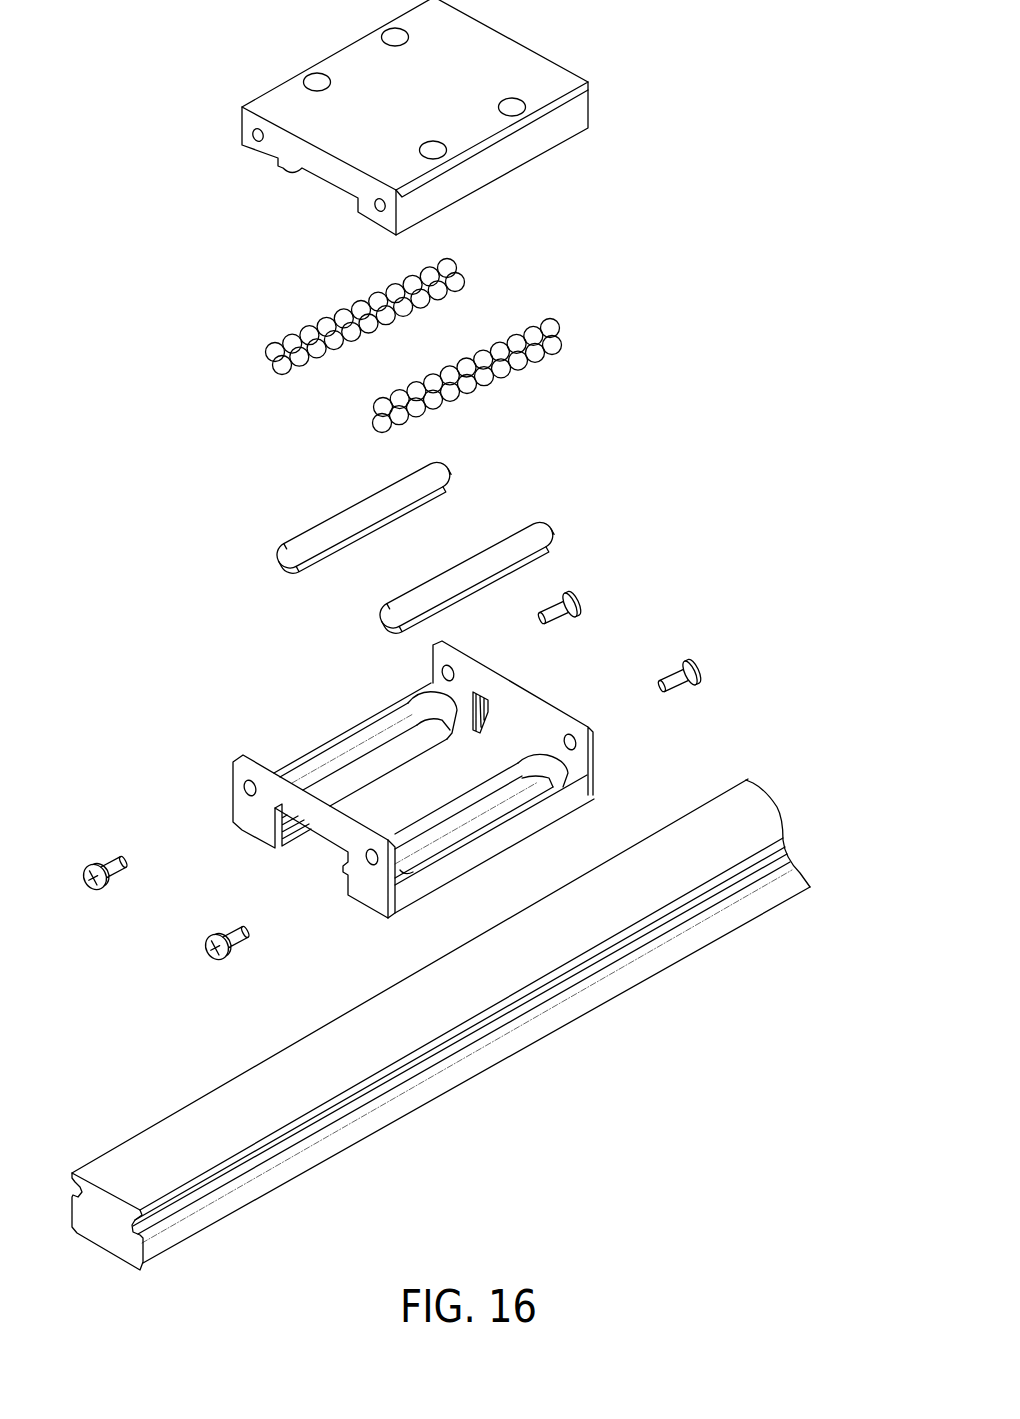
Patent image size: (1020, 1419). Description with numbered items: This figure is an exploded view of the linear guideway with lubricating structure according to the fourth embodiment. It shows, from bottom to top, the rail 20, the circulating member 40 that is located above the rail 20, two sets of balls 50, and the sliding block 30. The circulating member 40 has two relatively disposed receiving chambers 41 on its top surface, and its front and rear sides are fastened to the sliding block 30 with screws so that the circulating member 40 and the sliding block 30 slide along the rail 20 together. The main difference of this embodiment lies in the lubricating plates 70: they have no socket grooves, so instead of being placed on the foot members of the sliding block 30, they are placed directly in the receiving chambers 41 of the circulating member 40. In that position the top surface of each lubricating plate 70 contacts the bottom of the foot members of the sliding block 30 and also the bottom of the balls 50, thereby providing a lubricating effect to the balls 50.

The rail 20 is at (122, 1133).
The sliding block 30 is at (478, 55).
The circulating member 40 is at (363, 779).
The receiving chamber 41 is at (358, 777).
The balls 50 is at (275, 338).
The lubricating plate 70 is at (295, 547).